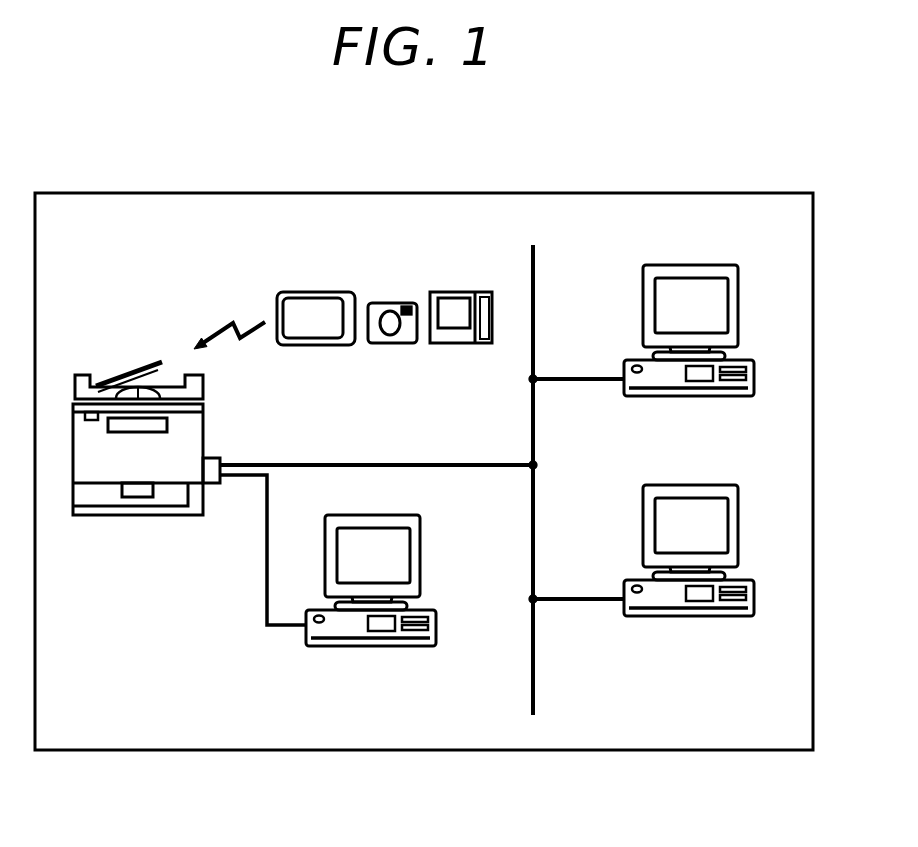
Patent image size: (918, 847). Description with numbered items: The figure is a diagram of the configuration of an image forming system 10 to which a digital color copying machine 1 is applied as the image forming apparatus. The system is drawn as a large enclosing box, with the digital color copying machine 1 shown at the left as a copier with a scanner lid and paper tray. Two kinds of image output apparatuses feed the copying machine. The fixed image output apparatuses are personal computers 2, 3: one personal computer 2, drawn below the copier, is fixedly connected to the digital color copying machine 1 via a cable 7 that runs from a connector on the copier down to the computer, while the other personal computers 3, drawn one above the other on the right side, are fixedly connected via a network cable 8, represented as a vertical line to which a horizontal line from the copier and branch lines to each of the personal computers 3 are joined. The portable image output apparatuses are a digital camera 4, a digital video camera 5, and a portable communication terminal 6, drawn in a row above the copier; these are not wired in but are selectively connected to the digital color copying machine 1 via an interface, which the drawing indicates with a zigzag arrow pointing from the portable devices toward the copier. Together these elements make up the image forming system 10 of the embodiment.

The digital color copying machine 1 is at (205, 420).
The personal computer 2 is at (420, 542).
The personal computers 3 is at (740, 312).
The digital camera 4 is at (337, 292).
The digital video camera 5 is at (410, 303).
The portable communication terminal 6 is at (474, 292).
The cable 7 is at (267, 553).
The network cable 8 is at (533, 420).
The image forming system 10 is at (768, 193).